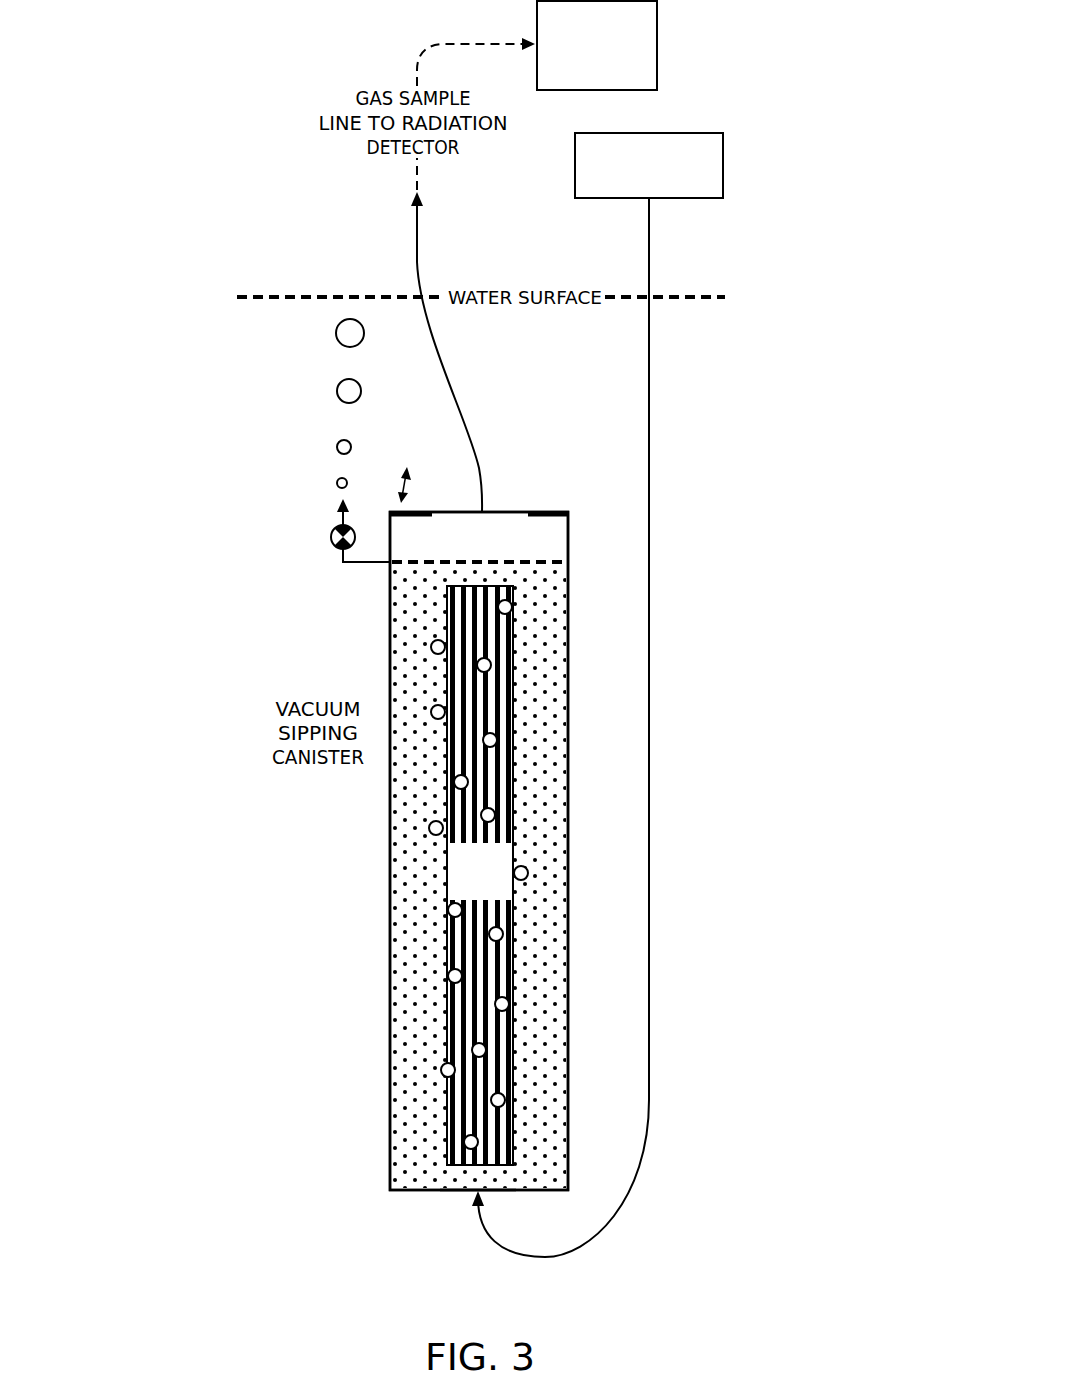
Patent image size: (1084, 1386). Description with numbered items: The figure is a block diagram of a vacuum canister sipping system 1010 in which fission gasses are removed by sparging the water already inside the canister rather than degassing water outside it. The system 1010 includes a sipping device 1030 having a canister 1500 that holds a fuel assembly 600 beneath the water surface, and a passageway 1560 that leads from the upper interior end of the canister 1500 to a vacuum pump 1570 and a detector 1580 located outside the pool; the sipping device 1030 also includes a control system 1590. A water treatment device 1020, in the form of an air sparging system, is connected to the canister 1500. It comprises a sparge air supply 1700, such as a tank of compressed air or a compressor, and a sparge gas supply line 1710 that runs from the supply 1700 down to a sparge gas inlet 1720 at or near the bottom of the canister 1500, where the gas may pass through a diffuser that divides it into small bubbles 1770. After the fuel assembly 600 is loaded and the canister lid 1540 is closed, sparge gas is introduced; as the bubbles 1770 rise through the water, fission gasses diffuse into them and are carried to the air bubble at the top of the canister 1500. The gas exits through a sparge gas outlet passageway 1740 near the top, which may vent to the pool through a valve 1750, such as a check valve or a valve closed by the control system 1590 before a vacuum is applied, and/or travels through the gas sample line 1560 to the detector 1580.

The vacuum pump 1570 is at (597, 45).
The detector 1580 is at (597, 45).
The control system 1590 is at (597, 45).
The sparge air supply 1700 is at (723, 148).
The passageway 1560 is at (444, 380).
The canister lid 1540 is at (500, 512).
The vacuum canister sipping system 1010 is at (292, 406).
The water treatment device 1020 is at (690, 575).
The valve 1750 is at (331, 541).
The sparge gas outlet passageway 1740 is at (375, 563).
The bubbles 1770 is at (431, 717).
The sparge gas supply line 1710 is at (651, 755).
The sipping device 1030 is at (320, 882).
The fuel assembly 600 is at (513, 920).
The canister 1500 is at (390, 1032).
The sparge gas inlet 1720 is at (476, 1192).